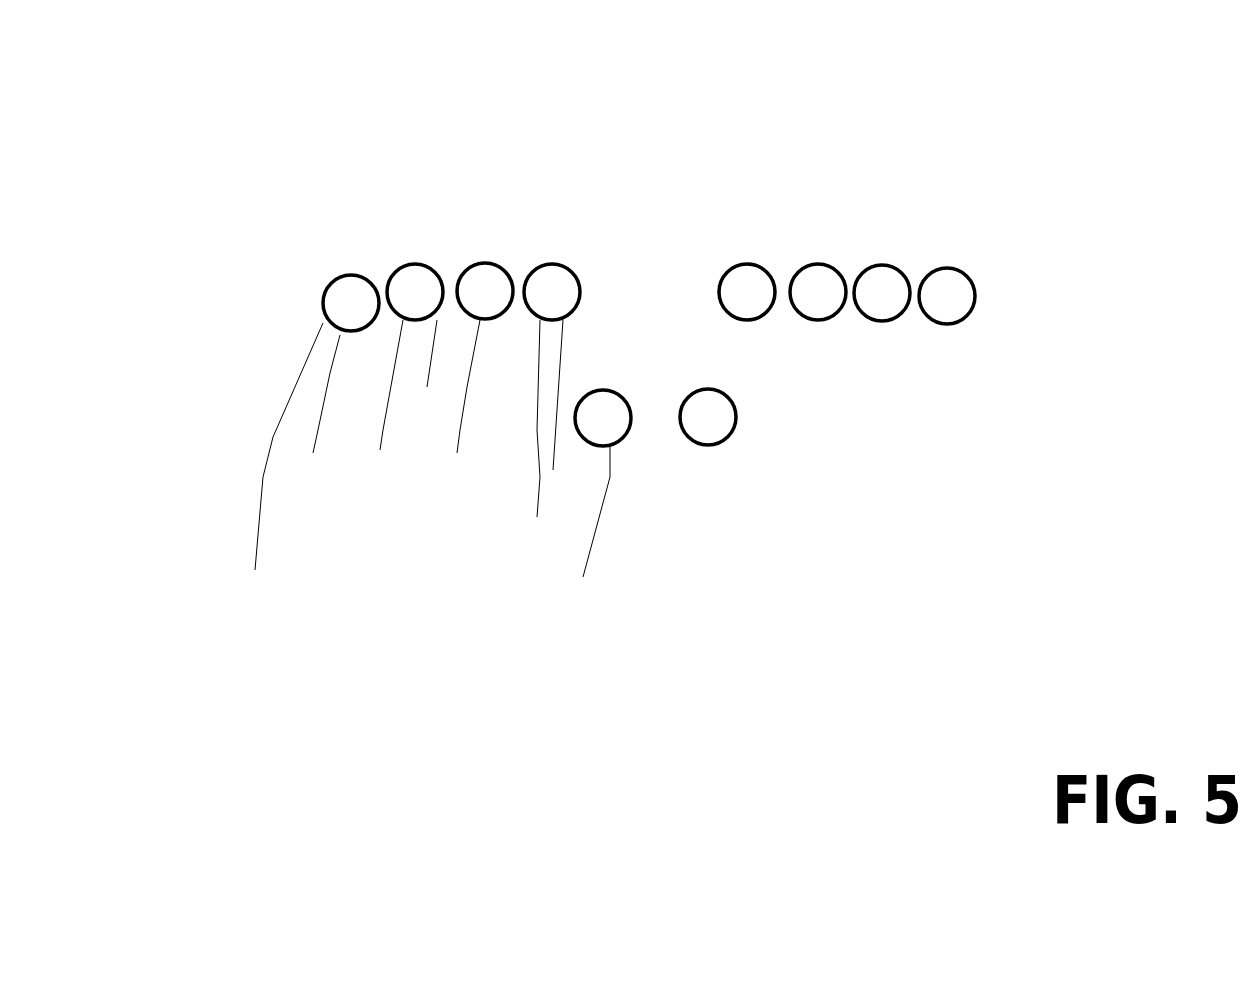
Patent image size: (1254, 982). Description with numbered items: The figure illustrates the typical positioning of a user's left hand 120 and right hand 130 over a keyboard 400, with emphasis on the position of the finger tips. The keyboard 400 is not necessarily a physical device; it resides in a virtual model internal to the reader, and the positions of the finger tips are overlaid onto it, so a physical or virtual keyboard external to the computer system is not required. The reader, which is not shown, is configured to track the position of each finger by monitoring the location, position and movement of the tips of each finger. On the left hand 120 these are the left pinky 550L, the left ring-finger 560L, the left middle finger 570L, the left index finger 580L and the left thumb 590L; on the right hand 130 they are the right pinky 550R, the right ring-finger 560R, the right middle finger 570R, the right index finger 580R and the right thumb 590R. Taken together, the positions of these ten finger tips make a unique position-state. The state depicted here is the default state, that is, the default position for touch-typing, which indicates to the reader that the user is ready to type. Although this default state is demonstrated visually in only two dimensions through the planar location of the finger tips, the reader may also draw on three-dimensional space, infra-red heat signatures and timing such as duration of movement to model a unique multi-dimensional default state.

The keyboard 400 is at (185, 275).
The left hand 120 is at (293, 528).
The right hand 130 is at (990, 540).
The left pinky 550L is at (332, 275).
The left ring-finger 560L is at (412, 253).
The left middle finger 570L is at (485, 248).
The left index finger 580L is at (552, 255).
The left thumb 590L is at (608, 380).
The right thumb 590R is at (707, 380).
The right index finger 580R is at (757, 253).
The right middle finger 570R is at (815, 250).
The right ring-finger 560R is at (874, 257).
The right pinky 550R is at (960, 260).